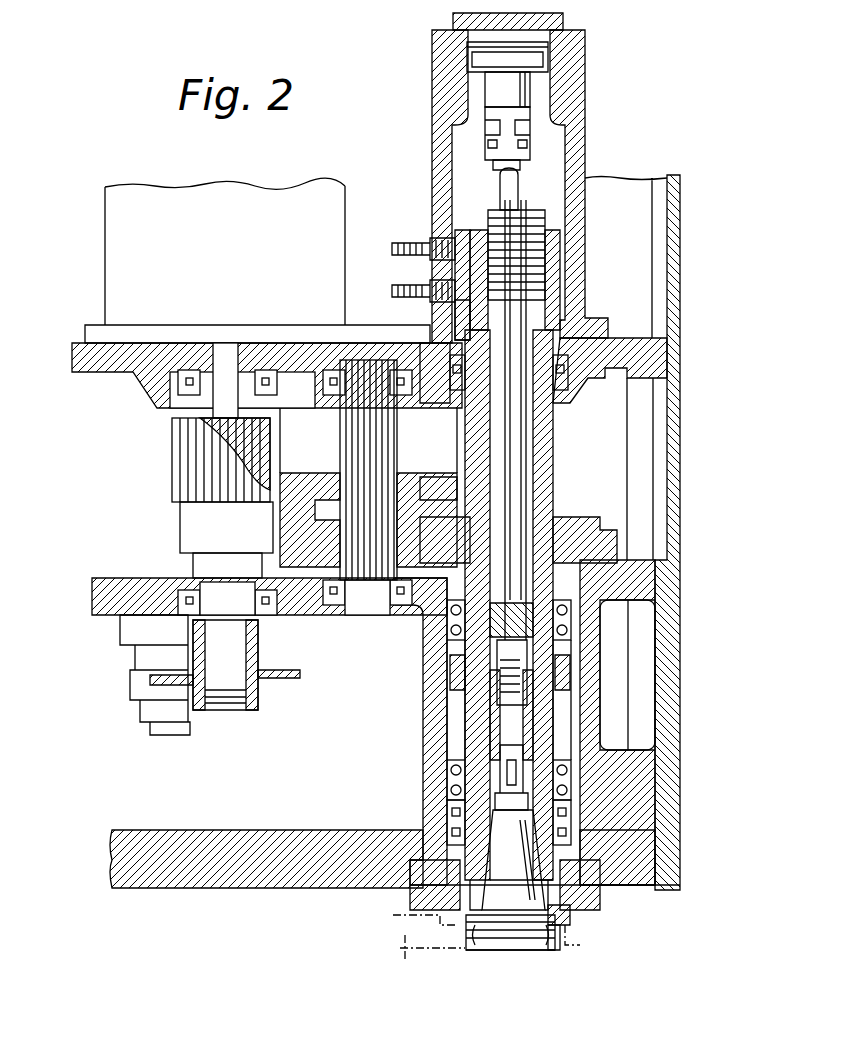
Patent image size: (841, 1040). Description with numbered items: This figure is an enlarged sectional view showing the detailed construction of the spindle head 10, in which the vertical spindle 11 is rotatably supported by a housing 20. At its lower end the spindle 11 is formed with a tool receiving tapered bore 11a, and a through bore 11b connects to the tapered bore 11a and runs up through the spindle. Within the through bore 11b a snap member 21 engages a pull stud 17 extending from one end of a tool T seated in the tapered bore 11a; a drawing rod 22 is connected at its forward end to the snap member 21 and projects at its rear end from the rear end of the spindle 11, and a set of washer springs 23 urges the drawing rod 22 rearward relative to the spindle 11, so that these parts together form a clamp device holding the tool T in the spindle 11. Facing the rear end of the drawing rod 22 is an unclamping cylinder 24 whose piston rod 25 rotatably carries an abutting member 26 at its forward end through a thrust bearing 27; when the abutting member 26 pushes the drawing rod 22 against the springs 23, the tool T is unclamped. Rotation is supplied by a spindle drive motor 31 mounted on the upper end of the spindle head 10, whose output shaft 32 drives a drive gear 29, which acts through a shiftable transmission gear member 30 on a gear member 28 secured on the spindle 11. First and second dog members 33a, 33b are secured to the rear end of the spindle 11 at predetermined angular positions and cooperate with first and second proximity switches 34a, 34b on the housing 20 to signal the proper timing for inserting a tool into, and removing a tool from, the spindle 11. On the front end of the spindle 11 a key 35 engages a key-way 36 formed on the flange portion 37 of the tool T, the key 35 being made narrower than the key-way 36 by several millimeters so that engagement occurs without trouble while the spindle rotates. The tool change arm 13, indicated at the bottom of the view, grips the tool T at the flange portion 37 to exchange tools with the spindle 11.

The spindle head 10 is at (692, 368).
The spindle 11 is at (470, 730).
The tool receiving tapered bore 11a is at (560, 840).
The through bore 11b is at (560, 672).
The tool change arm 13 is at (403, 950).
The pull stud 17 is at (455, 797).
The housing 20 is at (235, 872).
The snap member 21 is at (500, 712).
The drawing rod 22 is at (512, 482).
The washer springs 23 is at (560, 300).
The unclamping cylinder 24 is at (535, 87).
The piston rod 25 is at (535, 100).
The abutting member 26 is at (520, 167).
The thrust bearing 27 is at (535, 140).
The gear member 28 is at (600, 523).
The drive gear 29 is at (190, 470).
The shiftable transmission gear member 30 is at (300, 490).
The spindle drive motor 31 is at (115, 268).
The output shaft 32 is at (215, 410).
The first dog member 33a is at (462, 235).
The second dog member 33b is at (465, 300).
The first proximity switch 34a is at (435, 250).
The second proximity switch 34b is at (440, 291).
The key 35 is at (572, 912).
The key-way 36 is at (558, 940).
The flange portion 37 is at (485, 935).
The tool T is at (510, 962).